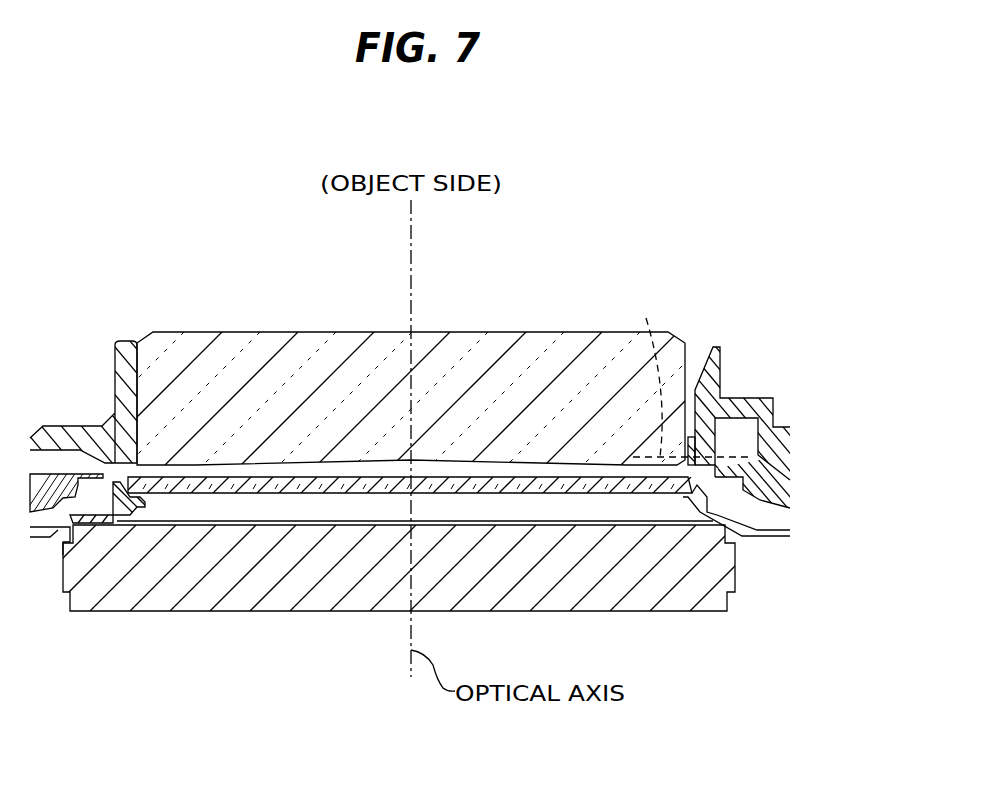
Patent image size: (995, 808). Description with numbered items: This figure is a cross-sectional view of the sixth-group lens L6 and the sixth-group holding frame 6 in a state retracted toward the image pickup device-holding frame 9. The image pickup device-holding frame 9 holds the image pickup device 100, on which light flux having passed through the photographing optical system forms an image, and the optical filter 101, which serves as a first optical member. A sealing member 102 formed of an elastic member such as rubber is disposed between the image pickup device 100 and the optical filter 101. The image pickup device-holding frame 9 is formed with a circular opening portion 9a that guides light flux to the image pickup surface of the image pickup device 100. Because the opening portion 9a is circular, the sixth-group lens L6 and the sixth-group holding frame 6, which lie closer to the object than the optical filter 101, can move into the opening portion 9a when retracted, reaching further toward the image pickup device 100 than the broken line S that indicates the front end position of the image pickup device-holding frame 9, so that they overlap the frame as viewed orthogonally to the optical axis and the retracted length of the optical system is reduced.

The sixth-group holding frame 6 is at (125, 345).
The sixth-group lens L6 is at (350, 332).
The broken line S is at (693, 374).
The image pickup device-holding frame 9 is at (763, 462).
The opening portion 9a is at (732, 462).
The image pickup device 100 is at (222, 598).
The optical filter 101 is at (345, 495).
The sealing member 102 is at (688, 517).